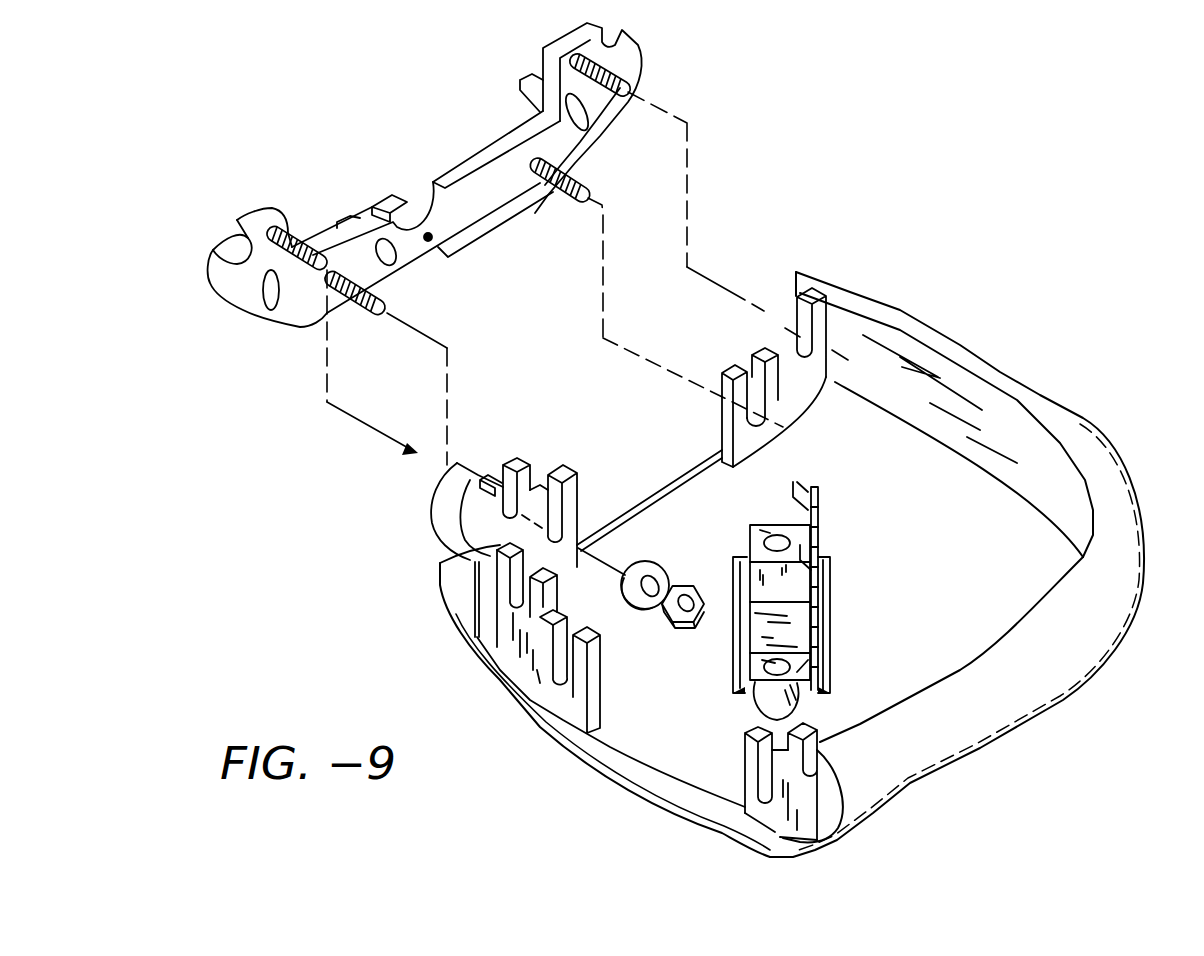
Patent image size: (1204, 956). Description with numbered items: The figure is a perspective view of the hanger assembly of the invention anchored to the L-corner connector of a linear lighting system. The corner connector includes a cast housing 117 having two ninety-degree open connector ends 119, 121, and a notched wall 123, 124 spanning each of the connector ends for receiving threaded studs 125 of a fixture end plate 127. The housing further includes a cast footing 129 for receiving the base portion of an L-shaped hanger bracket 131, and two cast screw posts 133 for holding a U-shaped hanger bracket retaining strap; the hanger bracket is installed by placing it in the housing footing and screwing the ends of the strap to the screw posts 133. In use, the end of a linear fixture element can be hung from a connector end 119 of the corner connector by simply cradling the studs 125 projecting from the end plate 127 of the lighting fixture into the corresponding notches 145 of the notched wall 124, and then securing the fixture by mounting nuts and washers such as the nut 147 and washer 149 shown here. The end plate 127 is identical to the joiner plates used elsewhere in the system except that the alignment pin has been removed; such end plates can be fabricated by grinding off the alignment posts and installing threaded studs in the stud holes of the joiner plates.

The cast housing 117 is at (1075, 431).
The open connector end 119 is at (690, 762).
The open connector end 121 is at (645, 455).
The notched wall 123 is at (800, 394).
The notched wall 124 is at (593, 687).
The threaded studs 125 is at (580, 172).
The fixture end plate 127 is at (483, 162).
The cast footing 129 is at (833, 607).
The L-shaped hanger bracket 131 is at (817, 537).
The cast screw posts 133 is at (800, 706).
The notches 145 is at (542, 456).
The nut 147 is at (677, 627).
The washer 149 is at (664, 572).